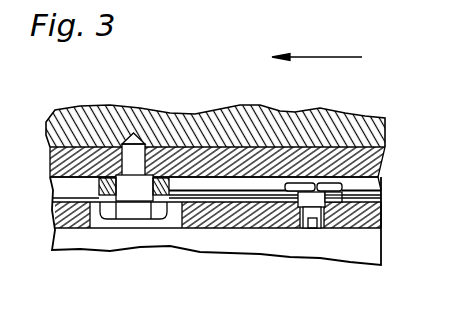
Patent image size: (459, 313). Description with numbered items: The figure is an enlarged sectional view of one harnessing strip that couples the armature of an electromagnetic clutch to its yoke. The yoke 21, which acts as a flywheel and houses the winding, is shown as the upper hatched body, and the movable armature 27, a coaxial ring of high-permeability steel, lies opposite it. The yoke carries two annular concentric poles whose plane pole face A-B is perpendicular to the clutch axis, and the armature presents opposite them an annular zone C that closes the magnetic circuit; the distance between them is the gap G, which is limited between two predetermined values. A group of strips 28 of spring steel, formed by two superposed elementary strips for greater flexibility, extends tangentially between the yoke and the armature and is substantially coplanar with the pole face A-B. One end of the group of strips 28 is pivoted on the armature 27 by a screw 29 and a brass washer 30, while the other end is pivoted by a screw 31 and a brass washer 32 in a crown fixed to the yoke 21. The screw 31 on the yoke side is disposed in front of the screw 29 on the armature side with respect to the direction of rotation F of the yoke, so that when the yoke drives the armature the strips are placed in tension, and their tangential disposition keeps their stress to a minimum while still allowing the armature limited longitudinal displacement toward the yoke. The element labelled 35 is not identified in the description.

The yoke 21 is at (290, 120).
The intermediate plate 35 is at (175, 157).
The strip 28 is at (215, 190).
The armature 27 is at (233, 217).
The washer 32 is at (158, 200).
The screw 31 is at (125, 207).
The screw 29 is at (317, 202).
The washer 30 is at (333, 205).
The annular zone C is at (368, 193).
The gap G is at (384, 200).
The pole face A-B is at (382, 209).
The direction of rotation F is at (317, 47).